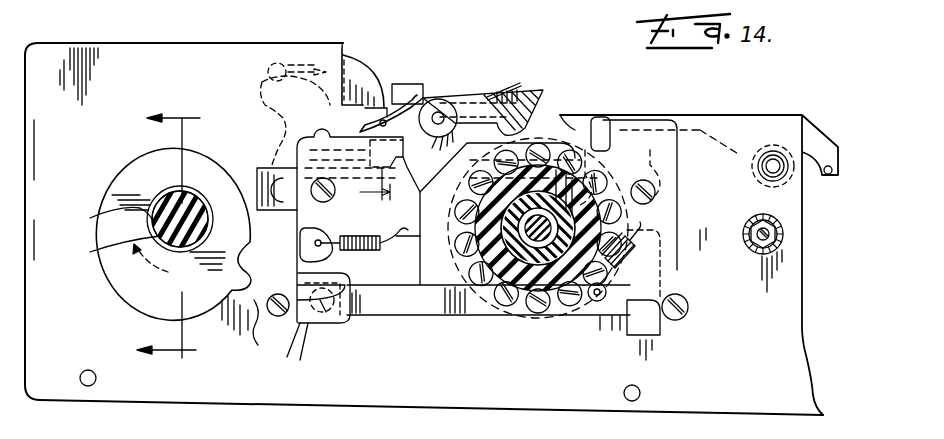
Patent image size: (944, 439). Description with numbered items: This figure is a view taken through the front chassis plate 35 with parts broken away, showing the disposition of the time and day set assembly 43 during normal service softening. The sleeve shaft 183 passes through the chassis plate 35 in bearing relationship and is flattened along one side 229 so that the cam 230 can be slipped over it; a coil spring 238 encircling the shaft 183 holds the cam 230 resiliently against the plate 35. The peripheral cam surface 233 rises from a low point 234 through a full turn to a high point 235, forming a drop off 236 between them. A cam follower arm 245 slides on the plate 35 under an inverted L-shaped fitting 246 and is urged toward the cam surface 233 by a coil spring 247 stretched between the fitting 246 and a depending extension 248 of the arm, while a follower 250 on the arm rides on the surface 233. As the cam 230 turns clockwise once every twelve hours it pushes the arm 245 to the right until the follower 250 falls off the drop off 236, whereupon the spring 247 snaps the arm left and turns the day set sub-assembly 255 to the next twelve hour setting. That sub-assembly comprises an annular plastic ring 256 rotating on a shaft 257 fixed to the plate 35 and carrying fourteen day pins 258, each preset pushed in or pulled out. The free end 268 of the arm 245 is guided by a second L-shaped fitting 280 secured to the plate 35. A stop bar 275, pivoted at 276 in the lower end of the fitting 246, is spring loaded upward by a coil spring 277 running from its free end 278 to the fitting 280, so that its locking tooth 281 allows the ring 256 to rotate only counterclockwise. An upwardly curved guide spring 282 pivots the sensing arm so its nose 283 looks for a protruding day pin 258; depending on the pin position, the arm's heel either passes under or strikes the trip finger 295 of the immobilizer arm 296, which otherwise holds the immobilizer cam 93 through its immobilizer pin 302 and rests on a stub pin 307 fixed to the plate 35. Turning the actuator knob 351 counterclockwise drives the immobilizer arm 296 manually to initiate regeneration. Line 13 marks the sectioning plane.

The section line 13 is at (184, 239).
The front chassis plate 35 is at (124, 48).
The time and day set assembly 43 is at (478, 53).
The immobilizer cam 93 is at (266, 84).
The sleeve shaft 183 is at (90, 254).
The flattened side 229 is at (180, 202).
The cam 230 is at (113, 291).
The peripheral cam surface 233 is at (150, 308).
The low point 234 is at (244, 264).
The high point 235 is at (262, 326).
The drop off 236 is at (248, 288).
The coil spring 238 is at (90, 220).
The cam follower arm 245 is at (276, 154).
The inverted L-shaped fitting 246 is at (285, 355).
The coil spring 247 is at (360, 250).
The depending extension 248 is at (418, 242).
The follower 250 is at (238, 182).
The day set sub-assembly 255 is at (519, 330).
The annular plastic ring 256 is at (482, 318).
The shaft 257 is at (540, 228).
The day pins 258 is at (555, 312).
The free end 268 is at (614, 135).
The stop bar 275 is at (428, 315).
The pivot 276 is at (327, 325).
The coil spring 277 is at (622, 263).
The free end 278 is at (612, 337).
The L-shaped fitting 280 is at (497, 94).
The locking tooth 281 is at (442, 110).
The guide spring 282 is at (422, 96).
The nose 283 is at (563, 120).
The trip finger 295 is at (398, 84).
The immobilizer arm 296 is at (367, 62).
The immobilizer pin 302 is at (276, 62).
The stub pin 307 is at (777, 150).
The actuator knob 351 is at (785, 232).